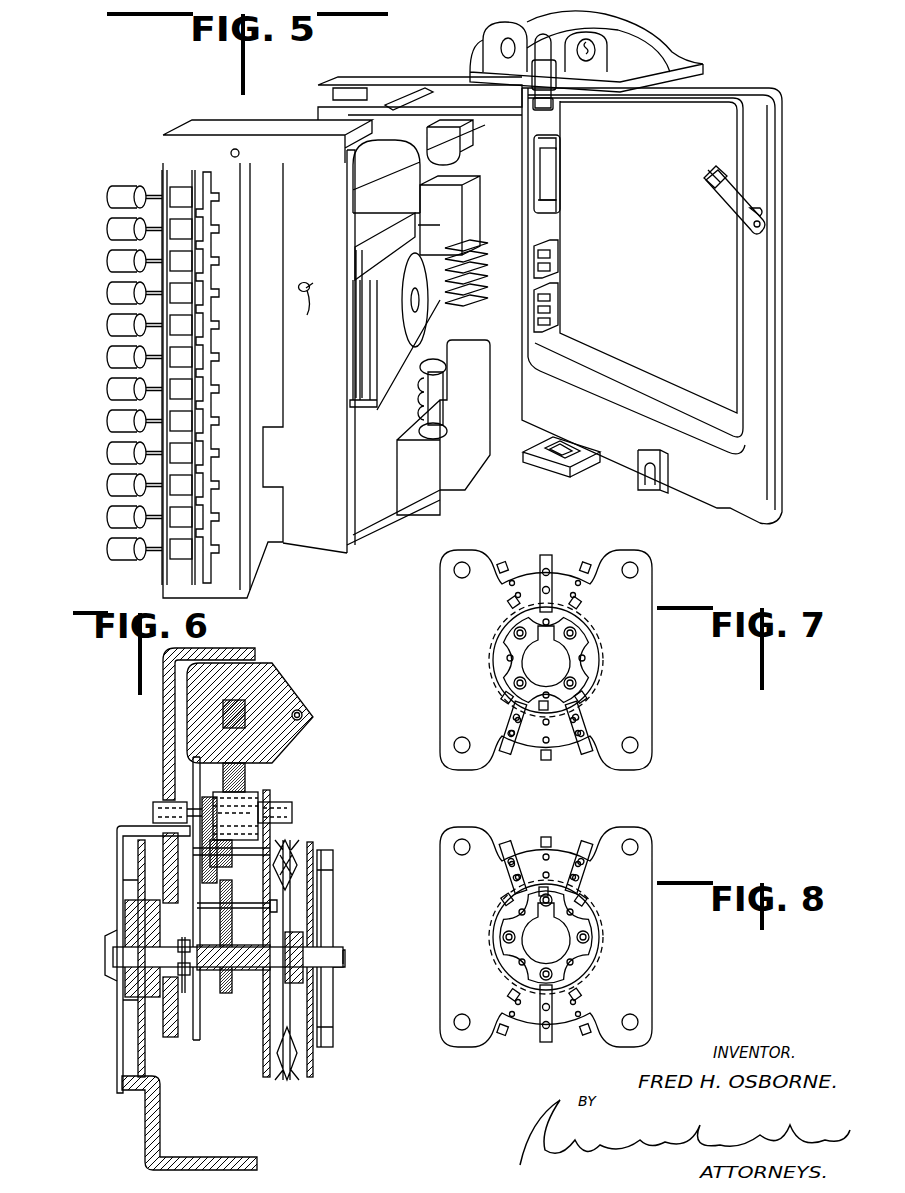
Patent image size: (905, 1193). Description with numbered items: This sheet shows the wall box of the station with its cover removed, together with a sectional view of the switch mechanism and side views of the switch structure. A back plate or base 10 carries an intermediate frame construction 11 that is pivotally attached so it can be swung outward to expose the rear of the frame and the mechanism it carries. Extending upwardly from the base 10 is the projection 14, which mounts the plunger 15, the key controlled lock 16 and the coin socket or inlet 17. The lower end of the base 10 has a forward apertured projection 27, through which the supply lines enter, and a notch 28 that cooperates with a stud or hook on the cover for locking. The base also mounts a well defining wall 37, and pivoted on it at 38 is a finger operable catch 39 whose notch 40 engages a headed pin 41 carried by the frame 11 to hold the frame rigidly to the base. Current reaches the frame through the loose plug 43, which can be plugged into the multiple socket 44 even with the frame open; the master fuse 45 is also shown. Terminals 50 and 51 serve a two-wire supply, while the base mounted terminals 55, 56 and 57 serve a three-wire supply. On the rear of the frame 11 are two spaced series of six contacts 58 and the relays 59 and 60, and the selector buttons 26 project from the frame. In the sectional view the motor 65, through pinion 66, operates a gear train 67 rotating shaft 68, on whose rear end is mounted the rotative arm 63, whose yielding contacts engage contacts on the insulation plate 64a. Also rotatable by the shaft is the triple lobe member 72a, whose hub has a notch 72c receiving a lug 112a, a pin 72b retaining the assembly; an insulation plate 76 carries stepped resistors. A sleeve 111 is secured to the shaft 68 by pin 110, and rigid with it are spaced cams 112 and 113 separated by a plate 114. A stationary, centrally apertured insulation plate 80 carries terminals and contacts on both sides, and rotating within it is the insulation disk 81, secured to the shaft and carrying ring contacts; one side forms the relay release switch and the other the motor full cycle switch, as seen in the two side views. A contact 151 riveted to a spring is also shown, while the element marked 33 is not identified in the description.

In FIG. 5, the back plate or base 10 is at (765, 480).
In FIG. 5, the intermediate frame construction 11 is at (322, 545).
In FIG. 5, the projection 14 is at (650, 43).
In FIG. 5, the plunger 15 is at (585, 33).
In FIG. 5, the key controlled lock 16 is at (590, 57).
In FIG. 5, the coin socket or inlet 17 is at (500, 40).
In FIG. 5, the selector buttons 26 is at (122, 440).
In FIG. 5, the forward apertured projection 27 is at (560, 477).
In FIG. 5, the notch 28 is at (652, 485).
In FIG. 5, the toothed rack bar 33 is at (203, 567).
In FIG. 5, the well defining wall 37 is at (745, 312).
In FIG. 5, the pivot 38 is at (757, 230).
In FIG. 5, the finger operable catch 39 is at (747, 207).
In FIG. 5, the notch 40 is at (730, 213).
In FIG. 5, the headed pin 41 is at (307, 310).
In FIG. 5, the loose plug 43 is at (477, 368).
In FIG. 5, the multiple socket 44 is at (457, 395).
In FIG. 5, the master fuse 45 is at (558, 178).
In FIG. 5, the terminal 50 is at (550, 250).
In FIG. 5, the terminal 51 is at (547, 262).
In FIG. 5, the base mounted terminal 55 is at (550, 291).
In FIG. 5, the base mounted terminal 56 is at (550, 307).
In FIG. 5, the base mounted terminal 57 is at (550, 320).
In FIG. 5, the contacts 58 is at (472, 270).
In FIG. 5, the relay 59 is at (470, 158).
In FIG. 5, the relay 60 is at (468, 192).
In FIG. 5, the rotative arm 63 is at (408, 318).
In FIG. 6, the rotative arm 63 is at (327, 912).
In FIG. 5, the insulation plate 64a is at (383, 315).
In FIG. 6, the insulation plate 64a is at (313, 1067).
In FIG. 6, the motor 65 is at (253, 800).
In FIG. 6, the pinion 66 is at (200, 782).
In FIG. 6, the gear train 67 is at (222, 893).
In FIG. 6, the shaft 68 is at (250, 968).
In FIG. 6, the triple lobe member 72a is at (117, 1003).
In FIG. 6, the pin 72b is at (112, 975).
In FIG. 6, the notch 72c is at (108, 925).
In FIG. 6, the insulation plate 76 is at (146, 860).
In FIG. 6, the insulation plate 80 is at (285, 1080).
In FIG. 7, the insulation plate 80 is at (643, 667).
In FIG. 8, the insulation plate 80 is at (640, 947).
In FIG. 6, the insulation disk 81 is at (293, 900).
In FIG. 7, the insulation disk 81 is at (582, 670).
In FIG. 8, the insulation disk 81 is at (580, 917).
In FIG. 6, the pin 110 is at (183, 978).
In FIG. 6, the sleeve 111 is at (193, 920).
In FIG. 6, the cam 112 is at (165, 1005).
In FIG. 6, the lug 112a is at (117, 902).
In FIG. 6, the cam 113 is at (183, 1000).
In FIG. 6, the plate 114 is at (145, 1040).
In FIG. 6, the contact 151 is at (130, 862).